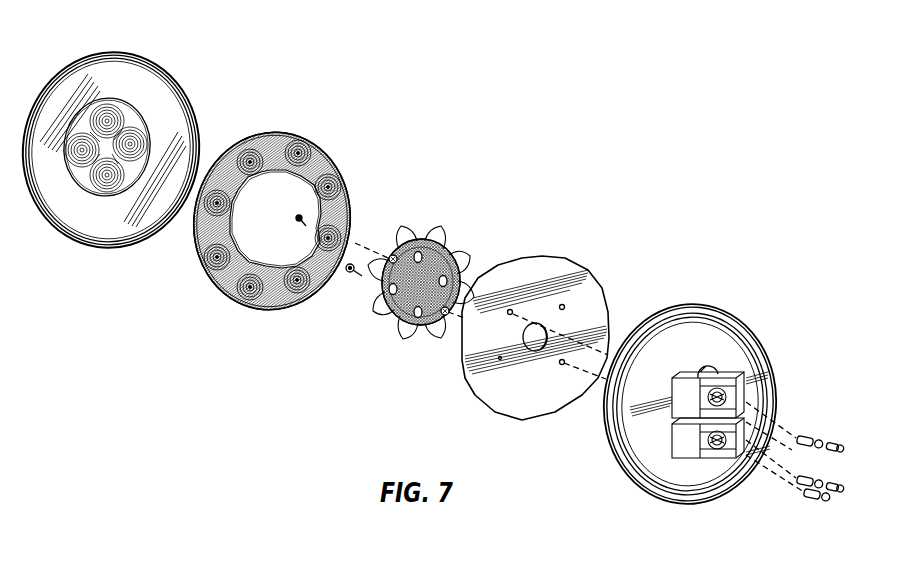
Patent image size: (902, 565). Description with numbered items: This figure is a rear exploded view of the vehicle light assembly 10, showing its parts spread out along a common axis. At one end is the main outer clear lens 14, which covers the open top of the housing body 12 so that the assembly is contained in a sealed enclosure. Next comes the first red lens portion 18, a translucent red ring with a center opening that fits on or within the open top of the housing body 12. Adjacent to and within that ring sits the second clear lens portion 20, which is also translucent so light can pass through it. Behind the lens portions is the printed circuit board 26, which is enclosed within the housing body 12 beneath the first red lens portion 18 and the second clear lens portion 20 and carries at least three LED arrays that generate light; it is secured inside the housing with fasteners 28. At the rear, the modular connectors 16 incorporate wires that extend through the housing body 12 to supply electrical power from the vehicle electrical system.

The light assembly 10 is at (553, 125).
The housing body 12 is at (736, 350).
The main outer clear lens 14 is at (161, 92).
The modular connectors 16 is at (742, 400).
The first red lens portion 18 is at (336, 152).
The second clear lens portion 20 is at (441, 250).
The printed circuit board 26 is at (591, 295).
The fasteners 28 is at (345, 272).